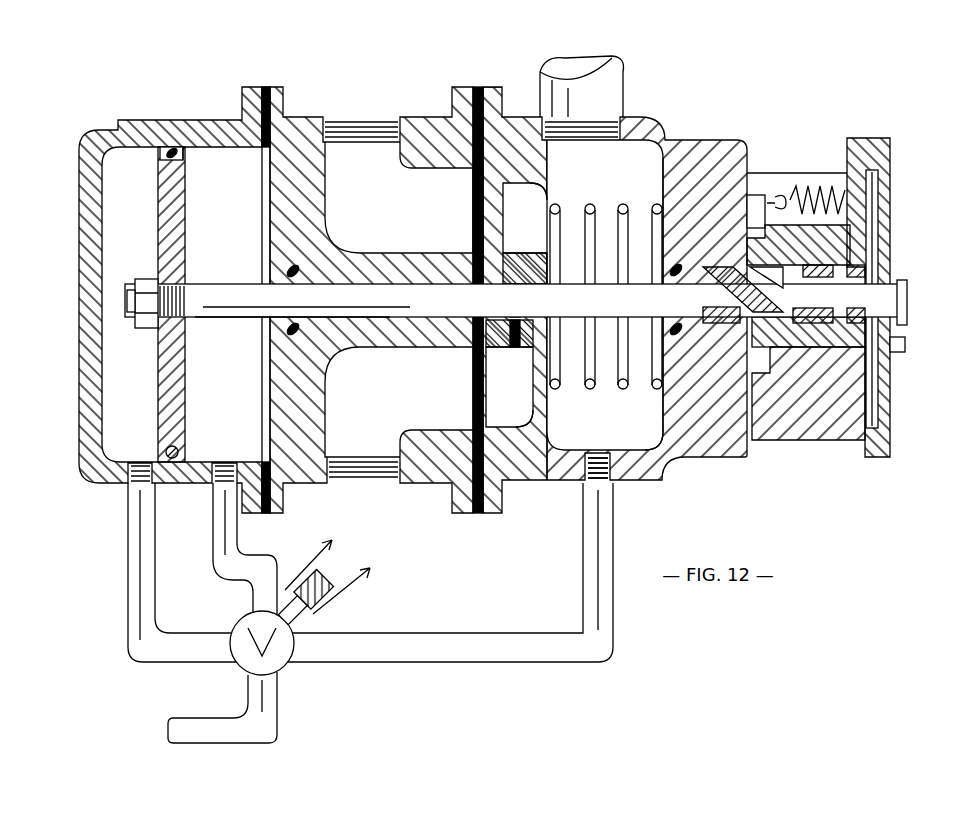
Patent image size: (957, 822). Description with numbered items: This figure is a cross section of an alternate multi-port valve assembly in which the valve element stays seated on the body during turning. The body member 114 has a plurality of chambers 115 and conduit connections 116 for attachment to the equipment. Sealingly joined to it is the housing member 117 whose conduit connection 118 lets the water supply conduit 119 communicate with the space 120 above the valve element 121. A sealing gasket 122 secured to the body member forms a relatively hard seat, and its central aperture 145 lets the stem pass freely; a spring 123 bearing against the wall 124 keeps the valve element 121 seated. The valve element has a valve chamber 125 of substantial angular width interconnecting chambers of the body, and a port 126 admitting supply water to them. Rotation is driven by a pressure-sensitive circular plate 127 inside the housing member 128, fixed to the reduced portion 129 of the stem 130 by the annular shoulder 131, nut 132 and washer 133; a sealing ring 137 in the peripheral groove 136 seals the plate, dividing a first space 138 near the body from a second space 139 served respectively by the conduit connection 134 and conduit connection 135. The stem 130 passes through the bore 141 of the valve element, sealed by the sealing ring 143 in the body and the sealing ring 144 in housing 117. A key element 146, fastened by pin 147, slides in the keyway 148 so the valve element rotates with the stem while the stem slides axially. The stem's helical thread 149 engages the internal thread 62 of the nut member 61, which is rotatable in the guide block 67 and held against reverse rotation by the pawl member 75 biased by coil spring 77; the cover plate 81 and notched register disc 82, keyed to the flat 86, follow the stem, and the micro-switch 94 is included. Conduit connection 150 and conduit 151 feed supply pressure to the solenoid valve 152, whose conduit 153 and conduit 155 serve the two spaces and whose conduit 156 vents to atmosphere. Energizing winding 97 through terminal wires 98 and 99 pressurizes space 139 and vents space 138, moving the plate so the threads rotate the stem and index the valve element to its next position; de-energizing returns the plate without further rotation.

The nut member 61 is at (836, 318).
The internal thread 62 is at (800, 318).
The guide block 67 is at (792, 441).
The pawl member 75 is at (757, 205).
The coil spring 77 is at (797, 190).
The cover plate 81 is at (889, 142).
The notched register disc 82 is at (879, 182).
The flat 86 is at (906, 312).
The micro-switch 94 is at (899, 352).
The winding 97 is at (318, 586).
The terminal wire 98 is at (348, 583).
The terminal wire 99 is at (314, 554).
The body member 114 is at (290, 106).
The chambers 115 is at (399, 197).
The conduit connections 116 is at (343, 122).
The housing member 117 is at (663, 126).
The conduit connection 118 is at (605, 118).
The water supply conduit 119 is at (605, 70).
The space 120 is at (605, 295).
The valve element 121 is at (540, 192).
The sealing gasket 122 is at (505, 428).
The spring 123 is at (590, 390).
The wall 124 is at (667, 421).
The valve chamber 125 is at (515, 387).
The port 126 is at (495, 222).
The circular plate 127 is at (184, 211).
The housing member 128 is at (80, 242).
The reduced portion 129 is at (184, 276).
The stem 130 is at (251, 318).
The annular shoulder 131 is at (186, 306).
The nut 132 is at (146, 328).
The washer 133 is at (157, 332).
The conduit connection 134 is at (212, 488).
The conduit connection 135 is at (128, 486).
The peripheral groove 136 is at (166, 153).
The sealing ring 137 is at (184, 153).
The first space 138 is at (223, 304).
The second space 139 is at (130, 304).
The bore 141 is at (536, 280).
The sealing ring 143 is at (286, 264).
The sealing ring 144 is at (605, 306).
The central aperture 145 is at (493, 316).
The key element 146 is at (534, 316).
The pin 147 is at (546, 340).
The keyway 148 is at (455, 316).
The helical thread 149 is at (710, 292).
The conduit connection 150 is at (585, 484).
The conduit 151 is at (590, 600).
The solenoid valve 152 is at (283, 668).
The conduit 153 is at (212, 557).
The conduit 155 is at (152, 623).
The conduit 156 is at (250, 712).